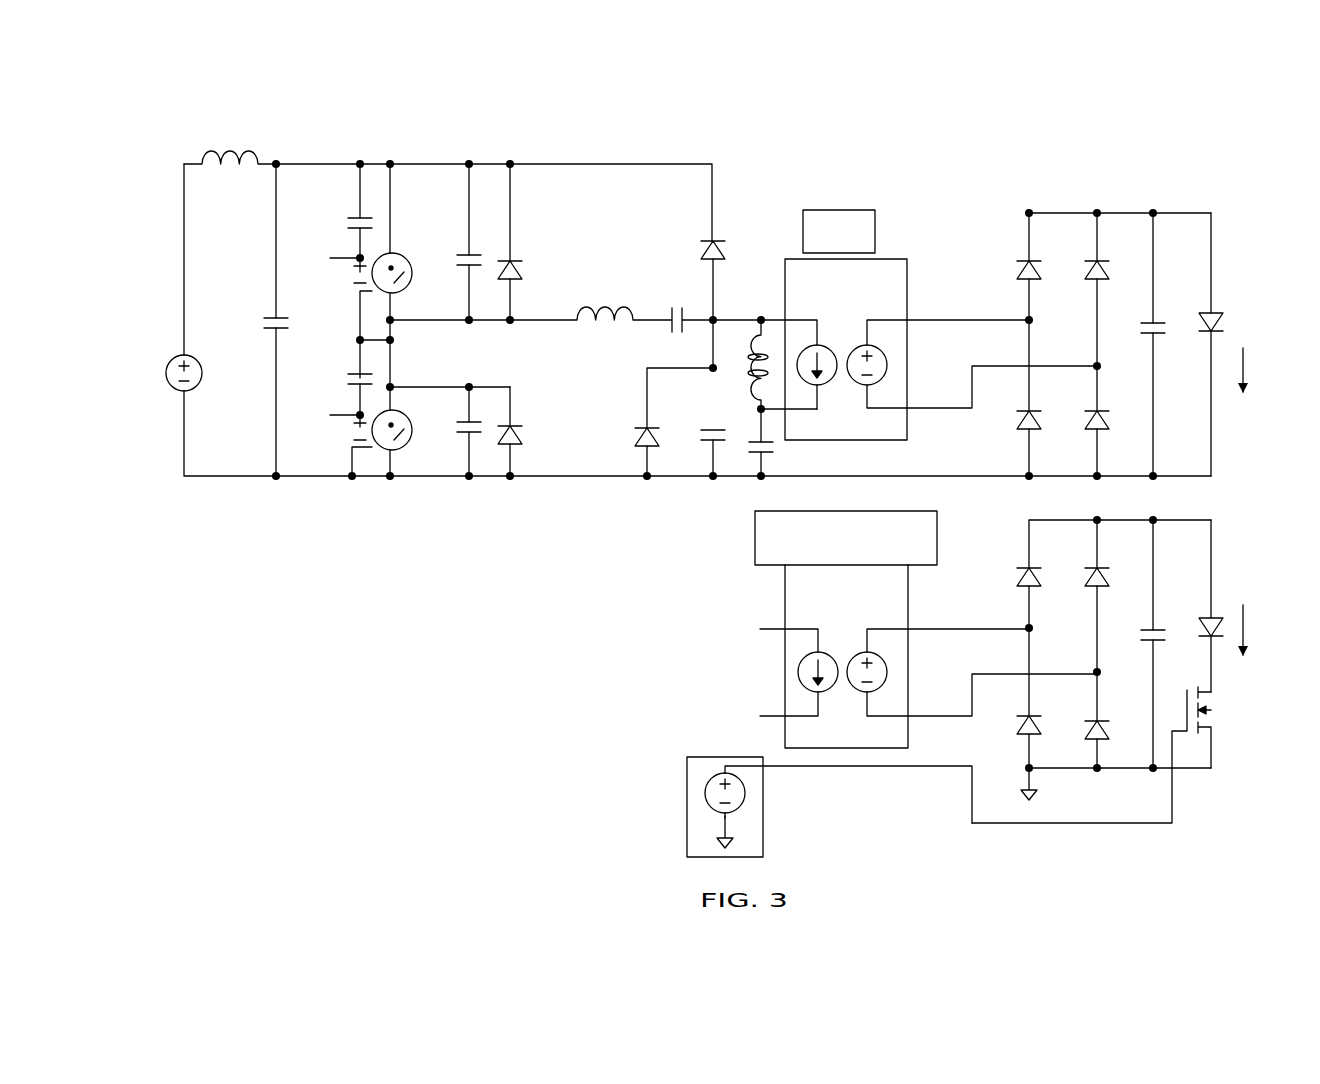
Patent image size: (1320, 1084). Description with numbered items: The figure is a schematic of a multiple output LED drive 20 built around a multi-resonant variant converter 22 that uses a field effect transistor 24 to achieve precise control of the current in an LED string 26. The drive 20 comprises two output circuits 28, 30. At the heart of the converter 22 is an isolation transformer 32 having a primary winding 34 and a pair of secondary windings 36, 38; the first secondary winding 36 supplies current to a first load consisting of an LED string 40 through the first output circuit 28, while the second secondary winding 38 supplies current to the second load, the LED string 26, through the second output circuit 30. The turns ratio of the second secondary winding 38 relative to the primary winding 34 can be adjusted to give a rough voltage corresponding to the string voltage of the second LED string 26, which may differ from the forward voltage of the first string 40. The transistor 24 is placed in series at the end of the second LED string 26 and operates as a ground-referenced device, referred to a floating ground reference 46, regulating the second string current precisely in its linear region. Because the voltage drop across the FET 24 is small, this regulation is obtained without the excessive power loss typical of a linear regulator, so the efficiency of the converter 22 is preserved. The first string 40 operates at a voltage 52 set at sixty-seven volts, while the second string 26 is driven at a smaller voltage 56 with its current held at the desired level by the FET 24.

The multiple output LED drive 20 is at (936, 140).
The multi-resonant variant converter 22 is at (838, 208).
The field effect transistor 24 is at (1213, 716).
The LED string 26 is at (1218, 612).
The output circuit 28 is at (1083, 188).
The output circuit 30 is at (1006, 830).
The isolation transformer 32 is at (890, 256).
The primary winding 34 is at (798, 288).
The secondary winding 36 is at (894, 288).
The secondary winding 38 is at (755, 537).
The LED string 40 is at (1220, 298).
The floating ground reference 46 is at (687, 805).
The voltage 52 is at (1186, 182).
The voltage 56 is at (1232, 490).